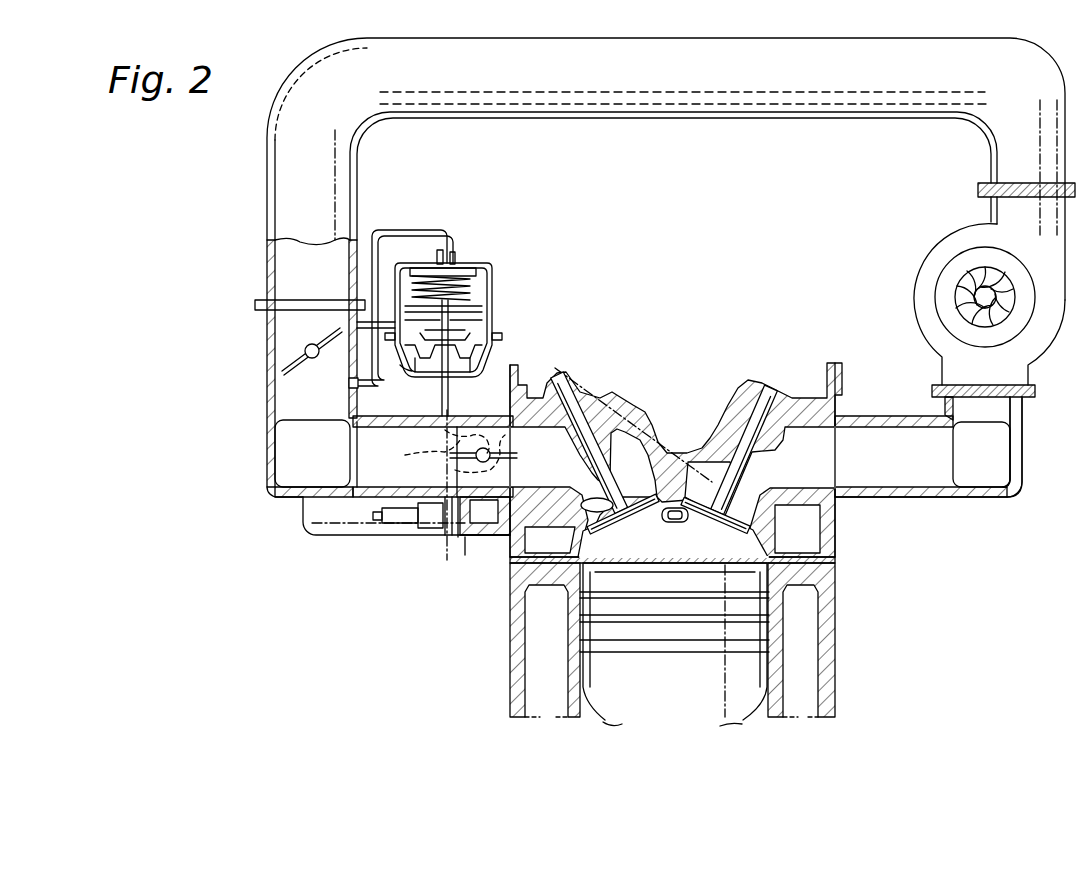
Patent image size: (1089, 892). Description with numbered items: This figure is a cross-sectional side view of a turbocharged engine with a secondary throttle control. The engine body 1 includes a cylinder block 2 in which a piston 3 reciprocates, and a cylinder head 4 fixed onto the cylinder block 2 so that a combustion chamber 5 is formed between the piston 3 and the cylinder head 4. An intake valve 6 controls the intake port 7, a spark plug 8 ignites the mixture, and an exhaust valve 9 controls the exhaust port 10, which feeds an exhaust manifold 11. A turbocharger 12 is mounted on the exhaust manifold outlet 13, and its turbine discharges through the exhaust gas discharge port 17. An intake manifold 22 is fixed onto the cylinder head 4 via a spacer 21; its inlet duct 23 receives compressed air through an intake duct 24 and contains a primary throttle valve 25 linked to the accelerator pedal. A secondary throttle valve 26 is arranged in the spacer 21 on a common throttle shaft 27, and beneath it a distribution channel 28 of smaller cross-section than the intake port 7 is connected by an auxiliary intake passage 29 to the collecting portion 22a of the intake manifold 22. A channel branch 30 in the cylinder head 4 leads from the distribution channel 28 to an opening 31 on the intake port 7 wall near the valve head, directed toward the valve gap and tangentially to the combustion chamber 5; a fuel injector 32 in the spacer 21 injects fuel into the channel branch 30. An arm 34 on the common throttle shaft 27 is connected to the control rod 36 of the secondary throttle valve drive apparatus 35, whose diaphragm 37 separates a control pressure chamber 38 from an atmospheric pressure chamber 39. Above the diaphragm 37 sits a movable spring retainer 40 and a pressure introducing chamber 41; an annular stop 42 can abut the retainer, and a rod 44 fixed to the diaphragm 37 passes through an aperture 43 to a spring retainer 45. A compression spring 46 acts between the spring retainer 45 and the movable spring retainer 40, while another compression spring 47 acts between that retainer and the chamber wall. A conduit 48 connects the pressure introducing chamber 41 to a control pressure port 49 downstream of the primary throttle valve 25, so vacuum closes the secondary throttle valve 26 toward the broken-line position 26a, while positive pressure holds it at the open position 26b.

The engine body 1 is at (838, 596).
The cylinder block 2 is at (836, 684).
The piston 3 is at (708, 696).
The cylinder head 4 is at (597, 451).
The combustion chamber 5 is at (638, 547).
The intake valve 6 is at (556, 372).
The intake port 7 is at (560, 480).
The spark plug 8 is at (684, 518).
The exhaust valve 9 is at (770, 394).
The exhaust port 10 is at (812, 470).
The exhaust manifold 11 is at (946, 488).
The turbocharger 12 is at (972, 300).
The exhaust manifold outlet 13 is at (996, 408).
The exhaust gas discharge port 17 is at (965, 290).
The spacer 21 is at (448, 440).
The intake manifold 22 is at (307, 479).
The collecting portion 22a is at (334, 464).
The inlet duct 23 is at (268, 340).
The intake duct 24 is at (712, 93).
The primary throttle valve 25 is at (283, 373).
The secondary throttle valve 26 is at (502, 455).
The completely closed position of secondary throttle valve 26a is at (455, 540).
The certain open degree position of secondary throttle valve 26b is at (447, 530).
The common throttle shaft 27 is at (458, 465).
The distribution channel 28 is at (484, 523).
The auxiliary intake passage 29 is at (334, 528).
The channel branch 30 is at (505, 540).
The opening 31 is at (598, 505).
The fuel injector 32 is at (400, 520).
The arm 34 is at (415, 454).
The secondary throttle valve drive apparatus 35 is at (494, 268).
The control rod 36 is at (440, 387).
The diaphragm 37 is at (484, 352).
The control pressure chamber 38 is at (478, 328).
The atmospheric pressure chamber 39 is at (400, 372).
The movable spring retainer 40 is at (356, 325).
The pressure introducing chamber 41 is at (455, 252).
The annular stop 42 is at (495, 325).
The aperture 43 is at (432, 372).
The rod 44 is at (485, 300).
The spring retainer 45 is at (476, 265).
The compression spring 46 is at (424, 258).
The compression spring 47 is at (429, 258).
The conduit 48 is at (390, 232).
The control pressure port 49 is at (349, 385).